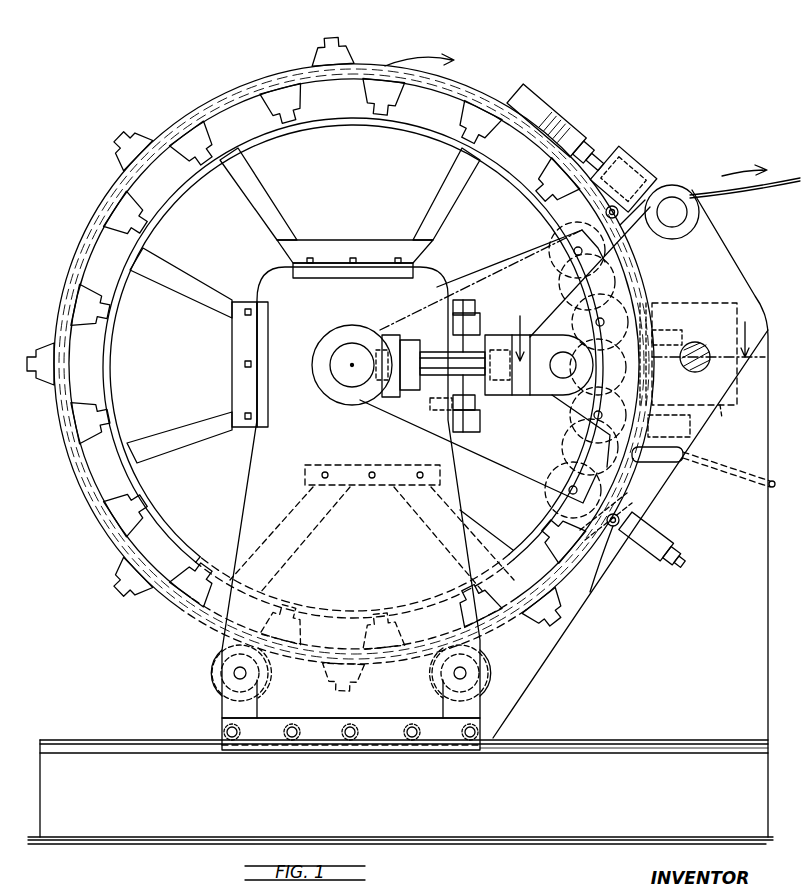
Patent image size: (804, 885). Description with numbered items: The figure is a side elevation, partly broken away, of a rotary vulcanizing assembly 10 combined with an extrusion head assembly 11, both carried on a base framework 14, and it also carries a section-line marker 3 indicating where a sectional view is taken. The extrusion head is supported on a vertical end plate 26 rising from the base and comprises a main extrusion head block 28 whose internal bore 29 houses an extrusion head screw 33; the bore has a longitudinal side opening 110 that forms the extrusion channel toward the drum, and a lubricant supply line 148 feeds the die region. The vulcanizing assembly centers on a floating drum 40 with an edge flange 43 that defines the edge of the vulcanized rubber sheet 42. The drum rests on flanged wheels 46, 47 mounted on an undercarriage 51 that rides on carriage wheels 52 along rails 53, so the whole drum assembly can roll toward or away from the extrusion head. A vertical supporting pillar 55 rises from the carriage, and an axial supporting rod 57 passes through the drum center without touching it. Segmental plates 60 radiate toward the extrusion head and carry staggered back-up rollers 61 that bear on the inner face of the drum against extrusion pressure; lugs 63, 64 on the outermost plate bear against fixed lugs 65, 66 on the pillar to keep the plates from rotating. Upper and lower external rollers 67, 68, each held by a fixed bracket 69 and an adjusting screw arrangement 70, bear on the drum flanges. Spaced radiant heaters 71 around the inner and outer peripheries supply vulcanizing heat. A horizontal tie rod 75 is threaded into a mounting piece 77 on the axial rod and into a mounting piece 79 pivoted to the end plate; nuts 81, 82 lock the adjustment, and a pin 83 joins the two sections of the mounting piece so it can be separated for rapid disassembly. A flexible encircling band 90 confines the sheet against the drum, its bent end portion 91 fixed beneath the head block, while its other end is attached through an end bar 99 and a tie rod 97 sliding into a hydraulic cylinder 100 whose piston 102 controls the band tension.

The section line 3 is at (640, 327).
The rotary vulcanizing assembly 10 is at (216, 76).
The extrusion head assembly 11 is at (749, 250).
The base framework 14 is at (105, 828).
The vertical end plate 26 is at (565, 752).
The main extrusion head block 28 is at (722, 418).
The internal bore 29 is at (737, 376).
The extrusion head screw 33 is at (692, 344).
The drum 40 is at (271, 79).
The vulcanized rubber sheet 42 is at (722, 196).
The rim or flange 43 is at (178, 610).
The flanged wheel 46 is at (212, 668).
The flanged wheel 47 is at (490, 668).
The undercarriage 51 is at (222, 726).
The carriage wheels 52 is at (268, 748).
The rails 53 is at (112, 752).
The vertical supporting pillar 55 is at (253, 470).
The axial supporting rod 57 is at (340, 372).
The segmental plates 60 is at (498, 270).
The back-up rollers 61 is at (556, 234).
The laterally projecting lugs 63 is at (465, 300).
The laterally projecting lugs 64 is at (455, 408).
The fixed lug 65 is at (478, 310).
The fixed lug 66 is at (478, 415).
The upper external roller 67 is at (622, 545).
The lower external roller 68 is at (622, 222).
The fixed bracket 69 is at (652, 528).
The adjusting screw arrangement 70 is at (670, 560).
The radiant heaters 71 is at (330, 38).
The tie rod 75 is at (442, 352).
The mounting piece 77 is at (345, 340).
The mounting piece 79 is at (546, 396).
The nut 81 is at (405, 340).
The nut 82 is at (505, 396).
The pin 83 is at (560, 340).
The encircling band or shield 90 is at (163, 132).
The transversely bent end portion 91 is at (648, 462).
The adjustable tie rod 97 is at (598, 148).
The end bar 99 is at (530, 88).
The hydraulic cylinder 100 is at (668, 185).
The piston 102 is at (640, 158).
The longitudinal side opening 110 is at (680, 365).
The external supply line 148 is at (722, 482).